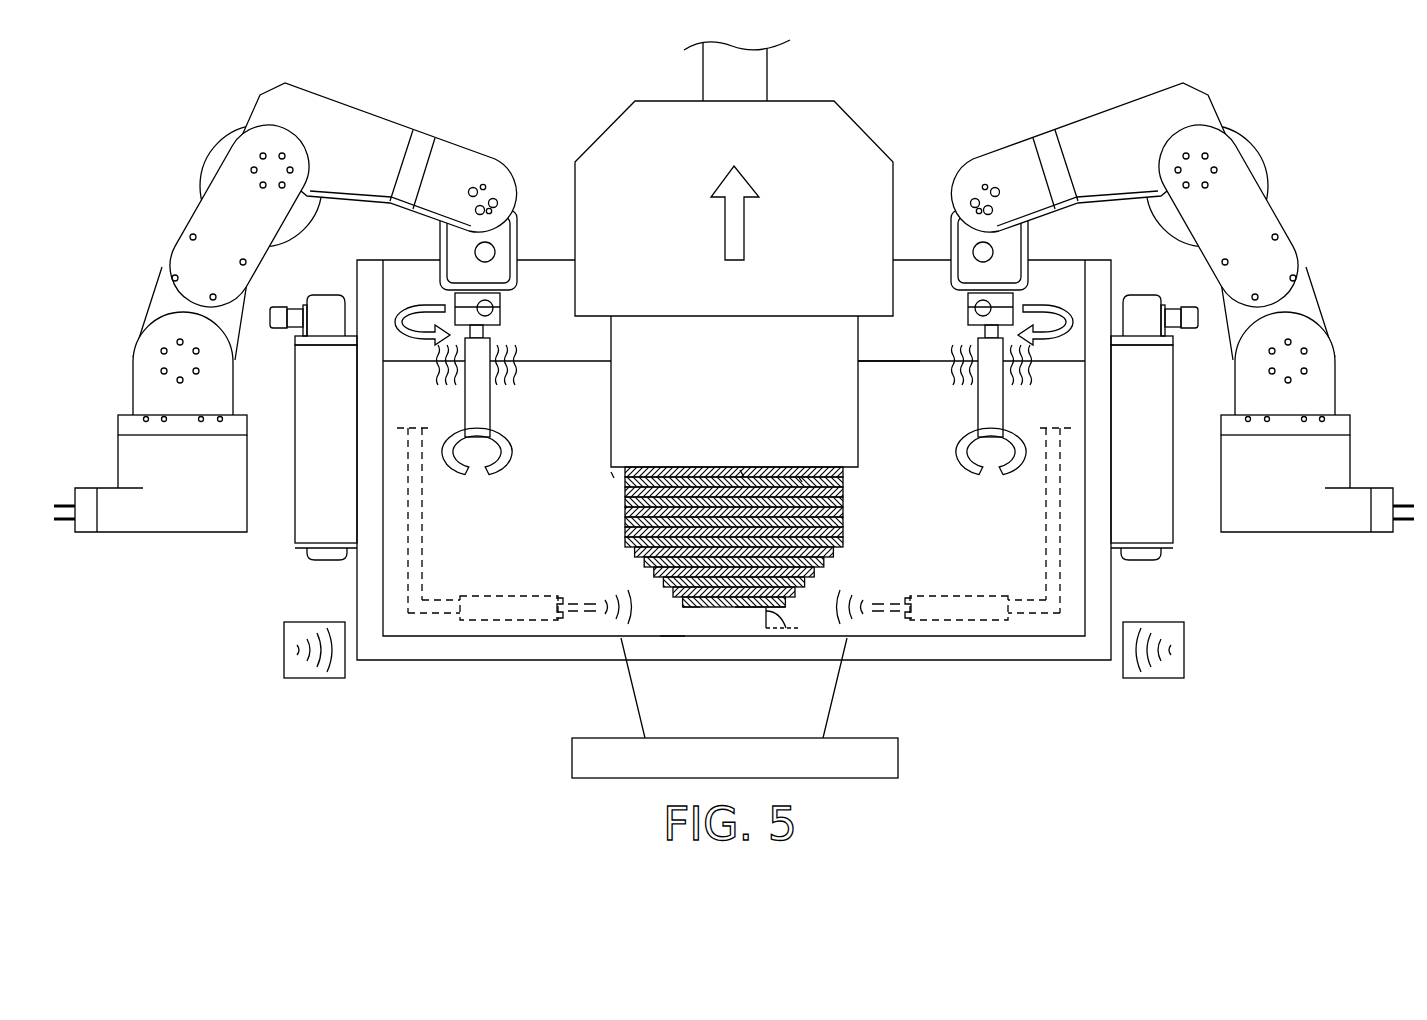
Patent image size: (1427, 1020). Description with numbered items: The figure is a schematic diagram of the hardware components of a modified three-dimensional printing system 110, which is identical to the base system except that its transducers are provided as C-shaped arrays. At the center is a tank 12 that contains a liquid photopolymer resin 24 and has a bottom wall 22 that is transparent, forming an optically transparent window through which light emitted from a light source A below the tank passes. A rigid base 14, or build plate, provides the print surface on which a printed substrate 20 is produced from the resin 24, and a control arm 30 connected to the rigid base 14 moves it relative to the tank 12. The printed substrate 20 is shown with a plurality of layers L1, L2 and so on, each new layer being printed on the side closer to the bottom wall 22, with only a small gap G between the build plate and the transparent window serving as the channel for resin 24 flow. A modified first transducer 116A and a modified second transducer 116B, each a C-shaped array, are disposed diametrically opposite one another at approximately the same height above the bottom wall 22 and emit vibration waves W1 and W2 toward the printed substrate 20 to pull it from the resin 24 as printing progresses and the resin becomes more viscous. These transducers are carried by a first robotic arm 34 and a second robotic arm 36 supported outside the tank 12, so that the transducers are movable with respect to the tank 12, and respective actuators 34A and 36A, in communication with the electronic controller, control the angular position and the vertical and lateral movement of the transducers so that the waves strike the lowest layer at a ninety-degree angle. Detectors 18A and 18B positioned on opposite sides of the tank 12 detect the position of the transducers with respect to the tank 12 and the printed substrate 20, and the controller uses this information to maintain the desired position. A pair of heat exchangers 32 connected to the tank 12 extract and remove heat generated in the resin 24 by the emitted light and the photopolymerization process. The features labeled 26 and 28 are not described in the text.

The modified 3D printing system 110 is at (1035, 40).
The tank 12 is at (1115, 585).
The rigid base 14 is at (613, 389).
The printed substrate 20 is at (852, 560).
The bottom wall 22 is at (1020, 627).
The liquid photopolymer resin 24 is at (888, 361).
The sensor conduit 26 is at (384, 613).
The layer interface 28 is at (612, 477).
The control arm 30 is at (768, 73).
The heat exchanger 32 is at (293, 515).
The first robotic arm 34 is at (162, 193).
The second robotic arm 36 is at (1306, 193).
The actuator 34A is at (500, 318).
The actuator 36A is at (968, 318).
The modified first transducer 116A is at (505, 467).
The modified second transducer 116B is at (963, 467).
The detector 18A is at (284, 659).
The detector 18B is at (1184, 659).
The light source A is at (860, 779).
The gap G is at (672, 636).
The first layer L1 is at (744, 476).
The second layer L2 is at (800, 482).
The first vibration wave W1 is at (700, 600).
The second vibration wave W2 is at (732, 600).